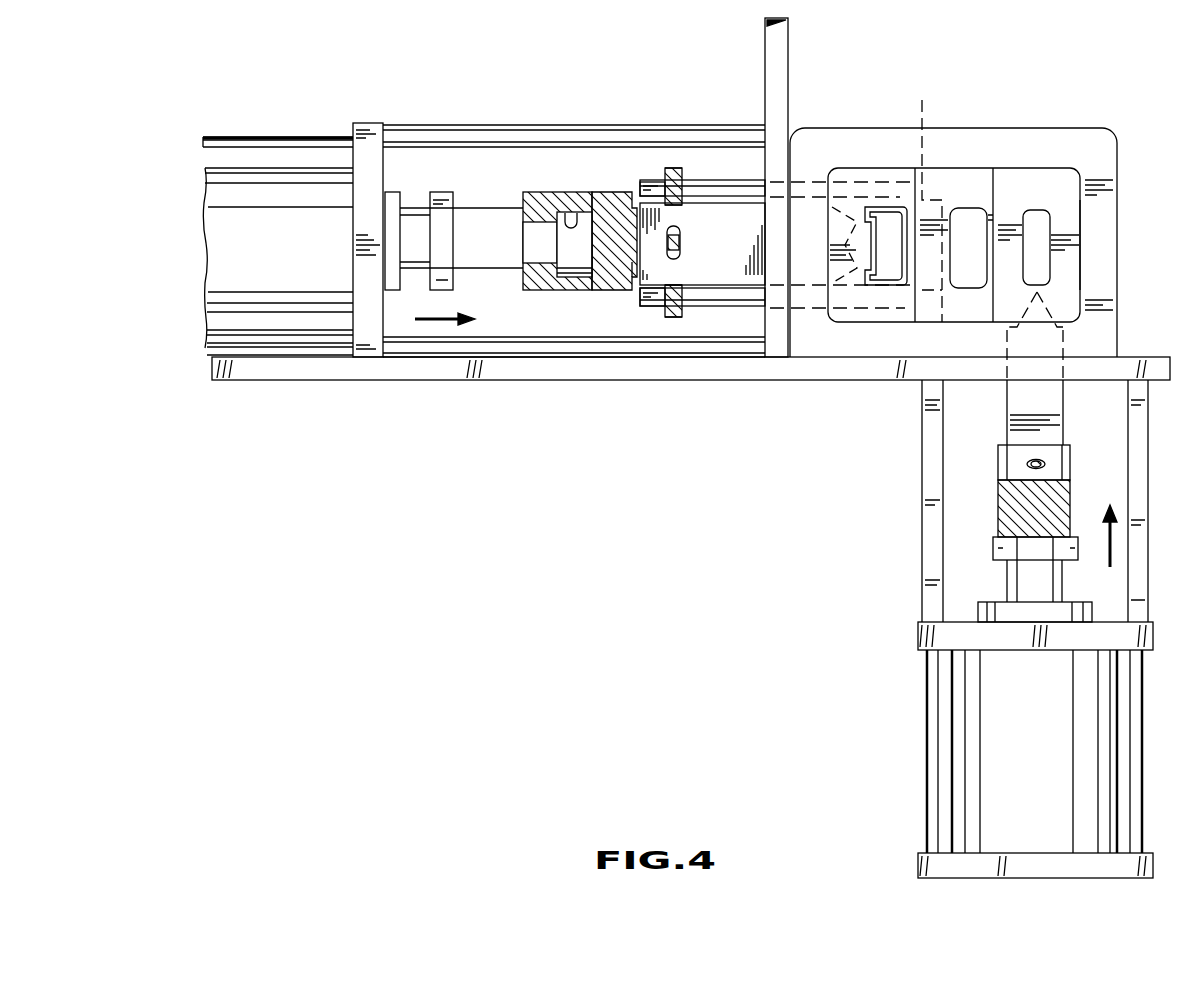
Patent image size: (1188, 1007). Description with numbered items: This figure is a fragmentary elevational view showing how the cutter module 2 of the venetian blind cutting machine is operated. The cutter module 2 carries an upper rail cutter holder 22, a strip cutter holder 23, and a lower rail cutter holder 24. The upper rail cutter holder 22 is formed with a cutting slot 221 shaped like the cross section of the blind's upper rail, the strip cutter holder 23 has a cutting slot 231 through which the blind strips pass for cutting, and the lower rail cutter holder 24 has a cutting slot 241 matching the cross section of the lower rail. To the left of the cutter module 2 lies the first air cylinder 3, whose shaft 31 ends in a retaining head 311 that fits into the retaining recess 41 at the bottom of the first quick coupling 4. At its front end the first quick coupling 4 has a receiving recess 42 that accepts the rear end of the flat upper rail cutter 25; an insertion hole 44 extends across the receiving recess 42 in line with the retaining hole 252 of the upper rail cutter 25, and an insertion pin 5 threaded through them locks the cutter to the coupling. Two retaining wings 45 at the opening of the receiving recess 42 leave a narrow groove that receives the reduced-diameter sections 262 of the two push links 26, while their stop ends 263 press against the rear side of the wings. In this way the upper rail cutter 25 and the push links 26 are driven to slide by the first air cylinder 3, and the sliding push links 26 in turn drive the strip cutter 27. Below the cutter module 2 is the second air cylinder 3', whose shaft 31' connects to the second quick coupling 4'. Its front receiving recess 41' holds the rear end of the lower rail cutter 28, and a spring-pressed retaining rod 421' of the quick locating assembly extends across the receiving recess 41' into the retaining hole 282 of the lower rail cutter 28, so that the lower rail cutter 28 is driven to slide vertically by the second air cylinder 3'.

The cutter module 2 is at (856, 362).
The first air cylinder 3 is at (278, 208).
The shaft 31 is at (438, 217).
The first quick coupling 4 is at (548, 179).
The retaining recess 41 is at (560, 177).
The retaining head 311 is at (580, 238).
The receiving recess 42 is at (608, 190).
The insertion hole 44 is at (631, 281).
The retaining wings 45 is at (671, 167).
The insertion pin 5 is at (678, 233).
The upper rail cutter holder 22 is at (854, 179).
The cutting slot 221 is at (888, 207).
The strip cutter holder 23 is at (962, 187).
The cutting slot 231 is at (978, 216).
The lower rail cutter holder 24 is at (1069, 191).
The cutting slot 241 is at (1040, 216).
The upper rail cutter 25 is at (659, 269).
The retaining hole 252 is at (681, 256).
The push links 26 is at (743, 179).
The reduced-diameter sections 262 is at (681, 179).
The stop ends 263 is at (645, 181).
The strip cutter 27 is at (922, 128).
The lower rail cutter 28 is at (1025, 403).
The retaining hole 282 is at (1040, 461).
The second air cylinder 3' is at (1015, 750).
The shaft 31' is at (992, 579).
The second quick coupling 4' is at (978, 519).
The receiving recess 41' is at (1011, 467).
The retaining rod 421' is at (1076, 468).